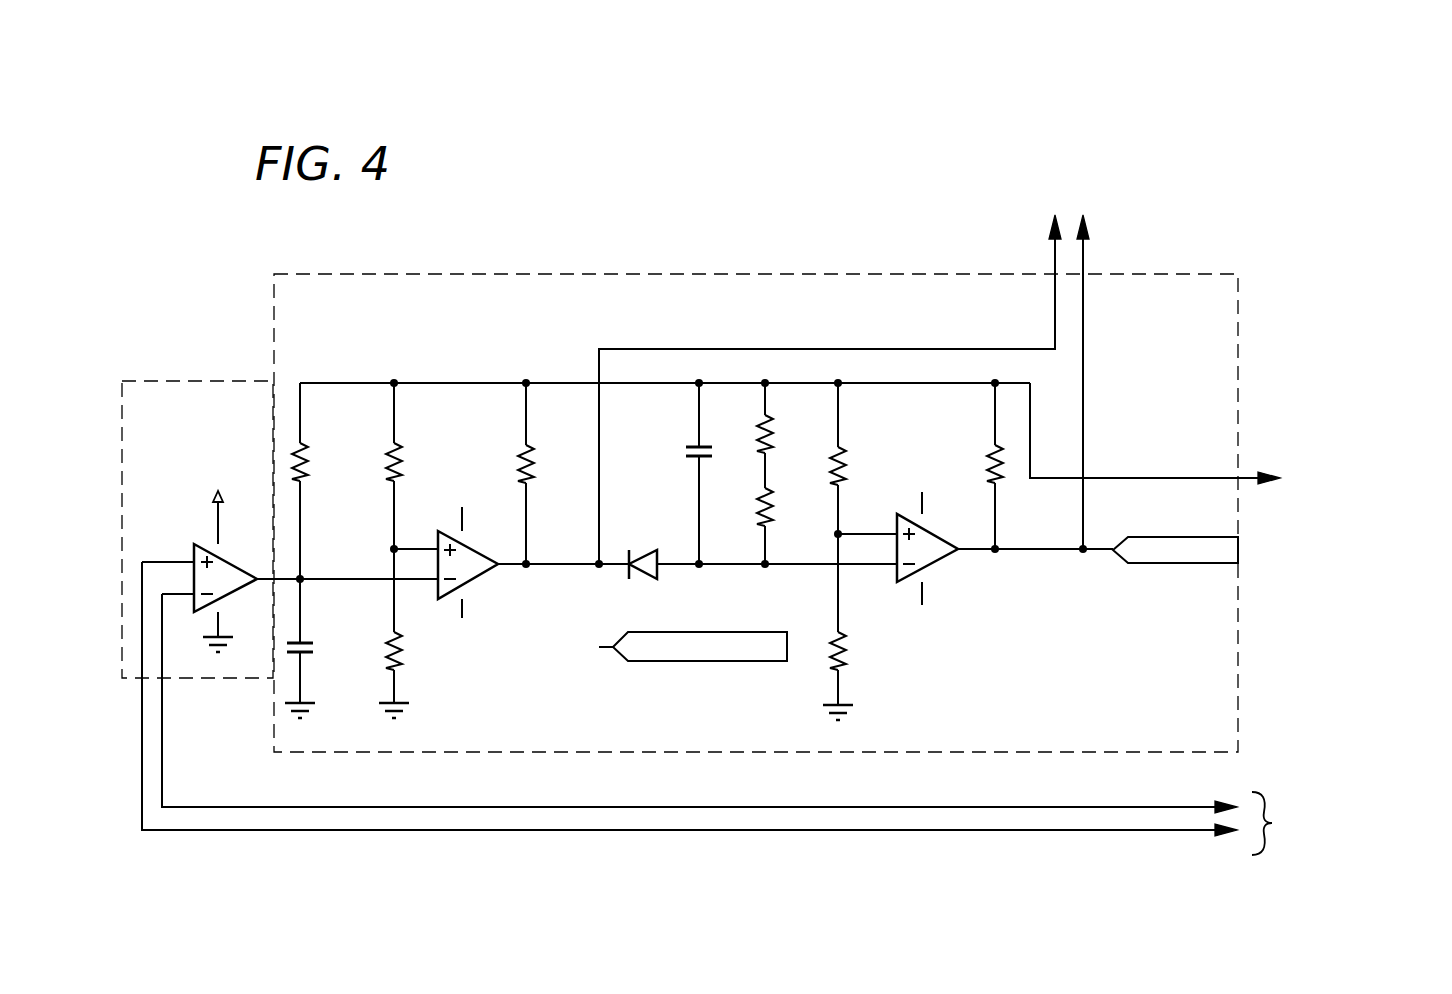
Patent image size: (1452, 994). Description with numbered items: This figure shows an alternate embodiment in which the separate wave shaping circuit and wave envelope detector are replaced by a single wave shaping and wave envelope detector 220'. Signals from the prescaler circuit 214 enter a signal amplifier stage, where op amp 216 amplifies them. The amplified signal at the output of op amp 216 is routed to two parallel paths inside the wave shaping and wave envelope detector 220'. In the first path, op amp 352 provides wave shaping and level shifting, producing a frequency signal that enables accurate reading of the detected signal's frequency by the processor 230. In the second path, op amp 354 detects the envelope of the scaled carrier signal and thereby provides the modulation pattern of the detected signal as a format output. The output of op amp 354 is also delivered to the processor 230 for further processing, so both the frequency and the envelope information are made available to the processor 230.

The op amp 216 is at (178, 380).
The wave shaping and wave envelope detector 220' is at (756, 492).
The processor 230 is at (1100, 196).
The prescaler circuit 214 is at (1362, 877).
The op amp 352 is at (480, 572).
The op amp 354 is at (938, 558).